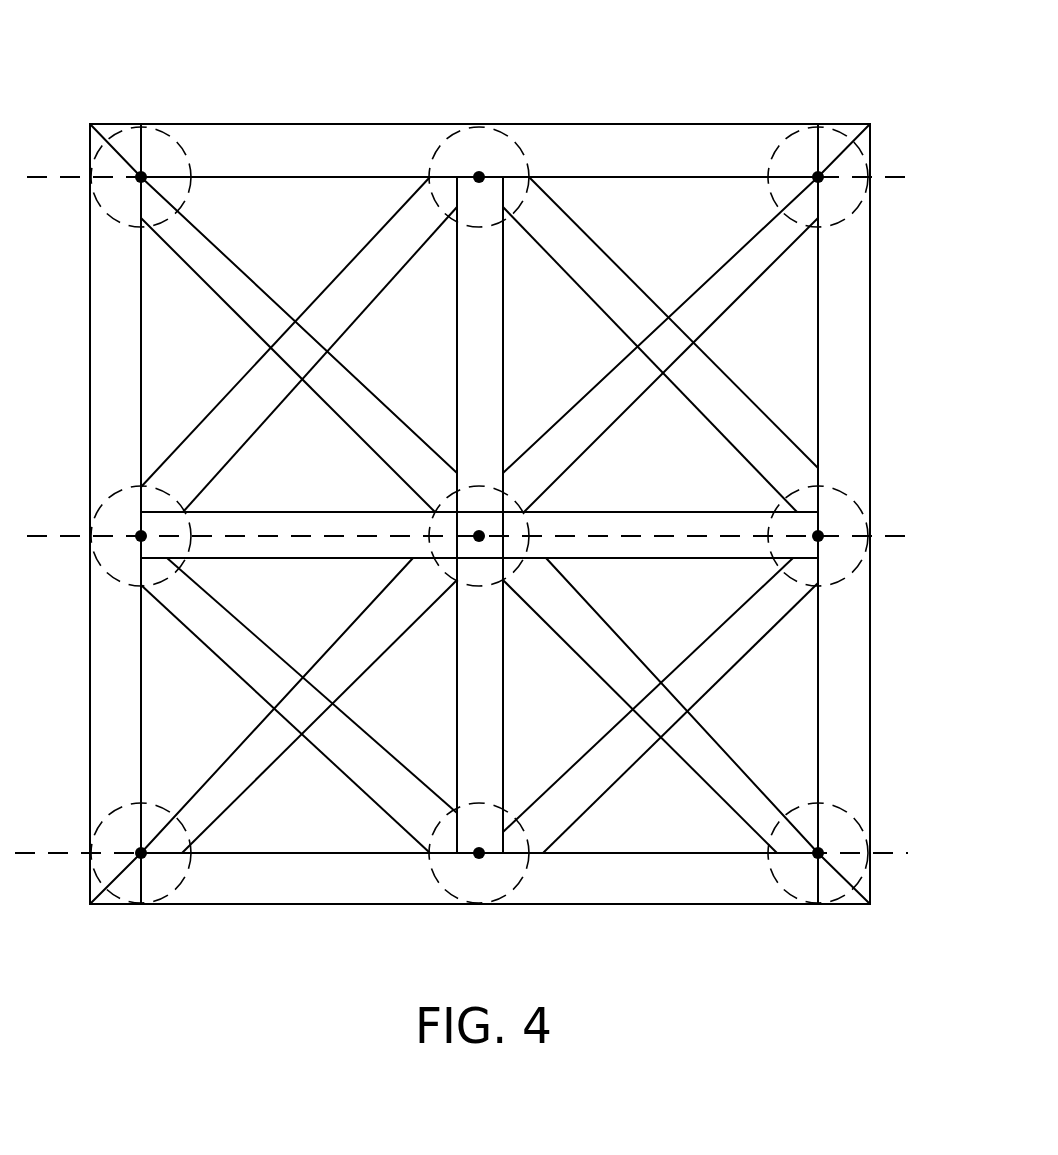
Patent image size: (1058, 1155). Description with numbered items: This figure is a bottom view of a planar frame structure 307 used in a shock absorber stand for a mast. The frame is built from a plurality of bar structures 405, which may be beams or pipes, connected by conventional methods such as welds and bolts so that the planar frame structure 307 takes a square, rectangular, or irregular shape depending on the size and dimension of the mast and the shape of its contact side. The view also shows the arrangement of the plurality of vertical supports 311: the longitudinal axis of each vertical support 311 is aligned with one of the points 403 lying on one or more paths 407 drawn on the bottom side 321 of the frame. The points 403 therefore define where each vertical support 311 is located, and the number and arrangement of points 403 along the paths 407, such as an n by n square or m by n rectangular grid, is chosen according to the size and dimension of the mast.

The planar frame structure 307 is at (249, 100).
The vertical supports 311 is at (103, 214).
The bottom side 321 is at (343, 163).
The points 403 is at (479, 177).
The bar structures 405 is at (646, 150).
The paths 407 is at (902, 172).